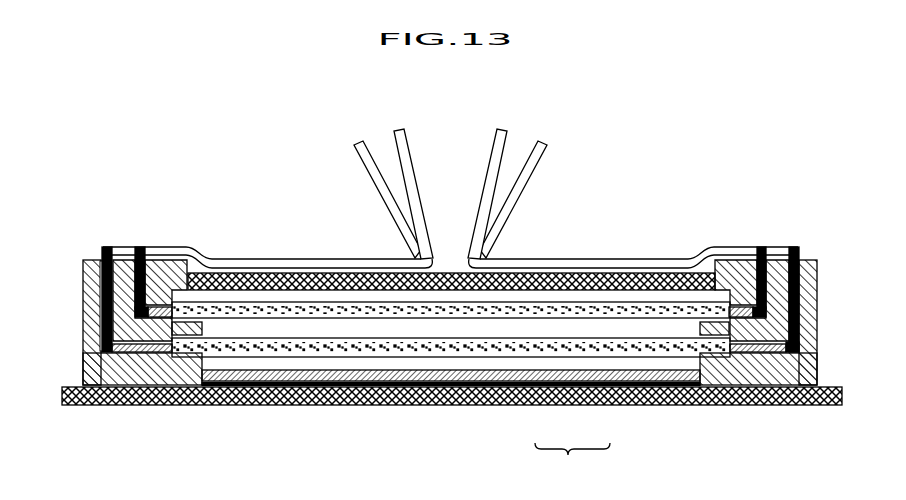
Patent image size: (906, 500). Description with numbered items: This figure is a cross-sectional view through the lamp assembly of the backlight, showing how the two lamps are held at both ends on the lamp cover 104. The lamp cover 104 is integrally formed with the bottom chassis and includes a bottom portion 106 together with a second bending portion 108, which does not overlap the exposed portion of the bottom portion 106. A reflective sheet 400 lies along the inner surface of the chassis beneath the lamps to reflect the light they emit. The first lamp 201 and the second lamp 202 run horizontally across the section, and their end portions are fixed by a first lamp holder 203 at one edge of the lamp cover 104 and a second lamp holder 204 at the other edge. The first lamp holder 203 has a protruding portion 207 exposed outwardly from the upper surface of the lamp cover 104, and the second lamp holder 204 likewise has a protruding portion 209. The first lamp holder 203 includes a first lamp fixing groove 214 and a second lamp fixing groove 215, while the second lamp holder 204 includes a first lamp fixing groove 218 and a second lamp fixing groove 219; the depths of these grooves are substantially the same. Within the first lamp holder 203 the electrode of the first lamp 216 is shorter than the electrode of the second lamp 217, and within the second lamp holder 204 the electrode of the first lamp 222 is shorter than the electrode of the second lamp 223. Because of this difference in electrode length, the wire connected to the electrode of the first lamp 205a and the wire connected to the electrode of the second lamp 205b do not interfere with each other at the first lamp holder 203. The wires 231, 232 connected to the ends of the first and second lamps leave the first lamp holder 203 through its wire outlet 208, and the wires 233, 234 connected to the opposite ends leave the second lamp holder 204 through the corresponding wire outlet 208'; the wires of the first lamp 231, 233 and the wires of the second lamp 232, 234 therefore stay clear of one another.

The first lamp holder 203 is at (110, 387).
The electrode of the second lamp 217 is at (152, 387).
The second lamp fixing groove 215 is at (191, 387).
The first lamp 201 is at (250, 316).
The second lamp 202 is at (290, 352).
The reflective sheet 400 is at (348, 382).
The second bending portion 108 is at (540, 291).
The bottom portion 106 is at (605, 386).
The lamp cover 104 is at (572, 458).
The second lamp fixing groove 219 is at (712, 387).
The electrode of the second lamp 223 is at (779, 387).
The second lamp holder 204 is at (819, 376).
The wire outlet 208 is at (128, 279).
The first wire connected to the electrode of the first lamp 205a is at (140, 248).
The first lamp fixing groove 214 is at (176, 300).
The protruding portion 207 is at (200, 262).
The first wire connected to the electrode of the second lamp 205b is at (100, 291).
The electrode of the first lamp 216 is at (84, 314).
The protruding portion 209 is at (686, 258).
The first lamp fixing groove 218 is at (722, 300).
The electrode of the first lamp 222 is at (758, 302).
The wire outlet 208' is at (773, 279).
The wire connected to the electrode of the first lamp 231 is at (368, 170).
The wire connected to the electrode of the second lamp 232 is at (405, 152).
The wire connected to the electrode of the first lamp 233 is at (496, 152).
The wire connected to the electrode of the second lamp 234 is at (532, 170).